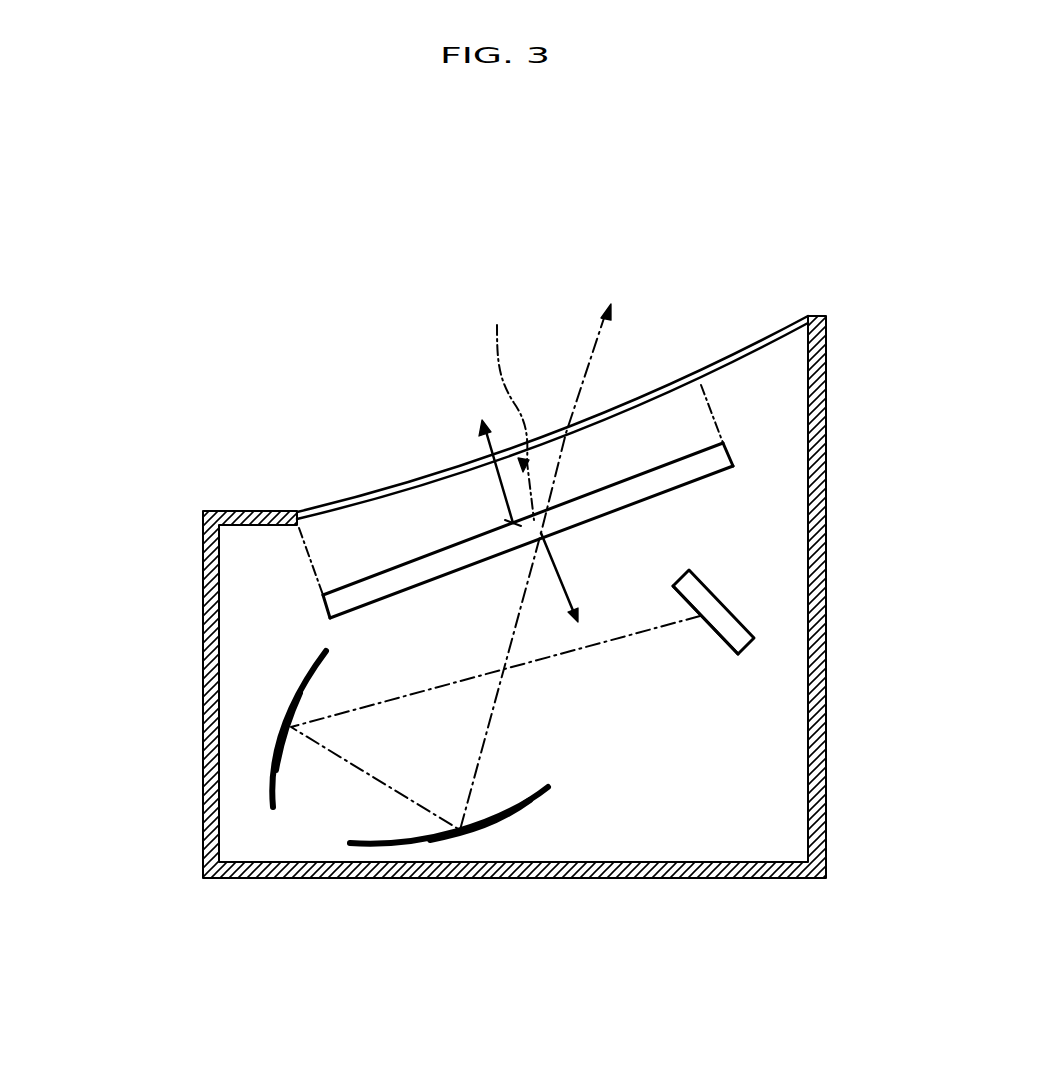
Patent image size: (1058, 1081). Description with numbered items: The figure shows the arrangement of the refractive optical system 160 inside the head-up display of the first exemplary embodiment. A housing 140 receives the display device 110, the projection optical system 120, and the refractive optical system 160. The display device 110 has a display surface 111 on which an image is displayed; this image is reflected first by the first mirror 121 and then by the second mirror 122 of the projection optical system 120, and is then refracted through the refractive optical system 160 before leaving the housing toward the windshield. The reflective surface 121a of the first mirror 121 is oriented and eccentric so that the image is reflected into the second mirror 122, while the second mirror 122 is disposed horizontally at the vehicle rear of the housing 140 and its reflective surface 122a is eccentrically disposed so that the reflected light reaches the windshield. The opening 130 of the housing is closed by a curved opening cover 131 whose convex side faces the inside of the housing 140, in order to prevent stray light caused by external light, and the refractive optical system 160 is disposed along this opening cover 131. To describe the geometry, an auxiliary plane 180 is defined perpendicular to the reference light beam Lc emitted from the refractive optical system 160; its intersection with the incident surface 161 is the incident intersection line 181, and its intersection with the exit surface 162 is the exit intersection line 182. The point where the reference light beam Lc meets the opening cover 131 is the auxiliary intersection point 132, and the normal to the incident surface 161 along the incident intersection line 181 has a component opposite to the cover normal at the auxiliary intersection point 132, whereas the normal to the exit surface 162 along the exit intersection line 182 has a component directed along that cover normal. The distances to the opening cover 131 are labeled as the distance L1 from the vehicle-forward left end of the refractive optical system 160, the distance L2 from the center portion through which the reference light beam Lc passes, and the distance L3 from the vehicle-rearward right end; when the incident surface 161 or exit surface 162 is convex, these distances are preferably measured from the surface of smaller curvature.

The display device 110 is at (785, 635).
The display surface 111 is at (738, 653).
The projection optical system 120 is at (330, 790).
The first mirror 121 is at (219, 729).
The reflective surface of first mirror 121a is at (332, 676).
The second mirror 122 is at (365, 856).
The reflective surface of second mirror 122a is at (527, 795).
The opening 130 is at (518, 390).
The opening cover 131 is at (777, 333).
The auxiliary intersection point 132 is at (574, 430).
The housing 140 is at (823, 478).
The refractive optical system 160 is at (420, 562).
The incident surface 161 is at (359, 614).
The exit surface 162 is at (362, 588).
The auxiliary plane 180 is at (488, 518).
The incident intersection line 181 is at (548, 538).
The exit intersection line 182 is at (513, 523).
The distance L1 is at (299, 528).
The distance L2 is at (510, 409).
The distance L3 is at (725, 436).
The reference light beam Lc is at (603, 330).